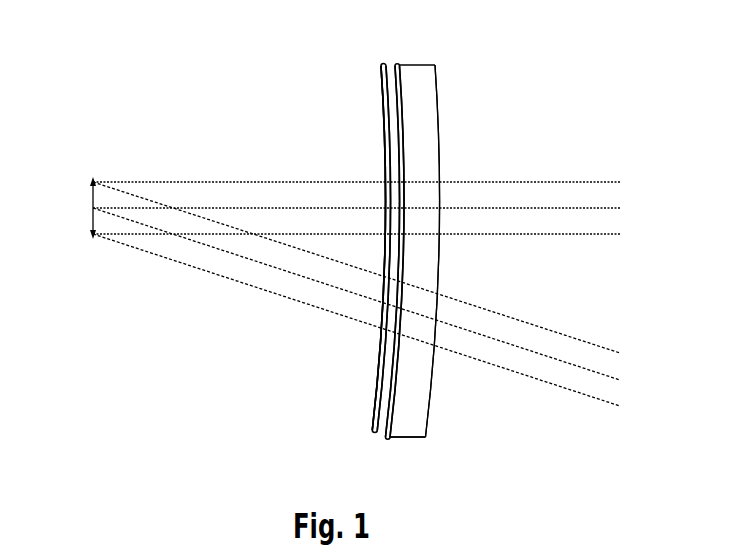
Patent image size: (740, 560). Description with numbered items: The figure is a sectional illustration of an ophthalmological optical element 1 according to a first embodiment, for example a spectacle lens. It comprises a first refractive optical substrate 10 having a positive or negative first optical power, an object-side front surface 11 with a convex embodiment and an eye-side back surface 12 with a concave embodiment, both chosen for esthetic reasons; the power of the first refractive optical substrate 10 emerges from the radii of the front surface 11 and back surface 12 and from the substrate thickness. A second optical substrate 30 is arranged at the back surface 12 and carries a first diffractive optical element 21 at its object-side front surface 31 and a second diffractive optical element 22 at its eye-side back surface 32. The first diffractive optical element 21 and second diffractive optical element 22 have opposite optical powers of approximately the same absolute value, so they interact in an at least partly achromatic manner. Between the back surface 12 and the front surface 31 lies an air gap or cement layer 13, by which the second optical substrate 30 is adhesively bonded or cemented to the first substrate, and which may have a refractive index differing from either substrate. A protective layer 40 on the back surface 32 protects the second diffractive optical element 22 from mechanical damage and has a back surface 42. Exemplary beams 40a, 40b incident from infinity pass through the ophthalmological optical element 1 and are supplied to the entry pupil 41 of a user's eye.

The ophthalmological optical element 1 is at (296, 55).
The first refractive optical substrate 10 is at (423, 88).
The front surface 11 is at (439, 145).
The back surface 12 is at (403, 158).
The cement layer 13 is at (383, 440).
The first diffractive optical element 21 is at (400, 64).
The second diffractive optical element 22 is at (382, 77).
The second optical substrate 30 is at (388, 82).
The front surface 31 is at (402, 113).
The back surface 32 is at (383, 100).
The protective layer 40 is at (372, 390).
The beam 40a is at (638, 178).
The beam 40b is at (638, 352).
The entry pupil 41 is at (92, 200).
The back surface 42 is at (377, 365).